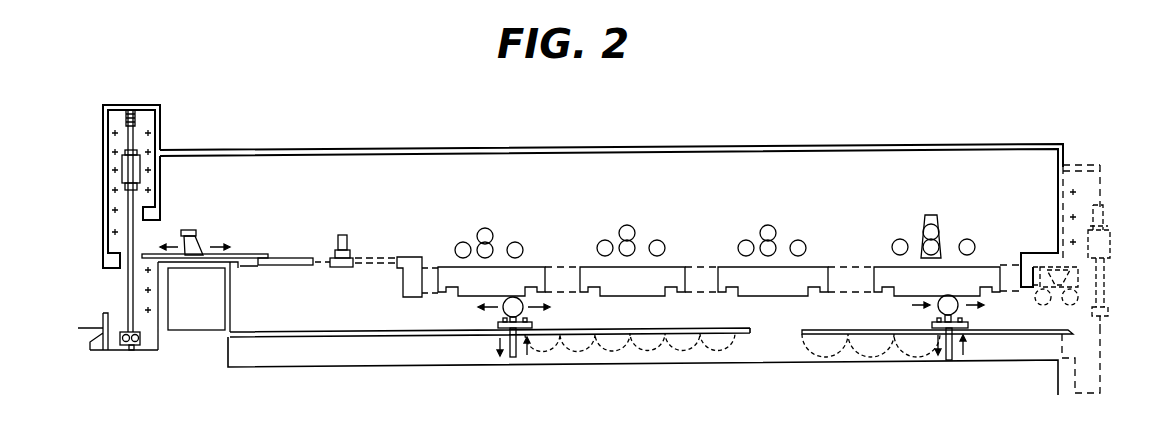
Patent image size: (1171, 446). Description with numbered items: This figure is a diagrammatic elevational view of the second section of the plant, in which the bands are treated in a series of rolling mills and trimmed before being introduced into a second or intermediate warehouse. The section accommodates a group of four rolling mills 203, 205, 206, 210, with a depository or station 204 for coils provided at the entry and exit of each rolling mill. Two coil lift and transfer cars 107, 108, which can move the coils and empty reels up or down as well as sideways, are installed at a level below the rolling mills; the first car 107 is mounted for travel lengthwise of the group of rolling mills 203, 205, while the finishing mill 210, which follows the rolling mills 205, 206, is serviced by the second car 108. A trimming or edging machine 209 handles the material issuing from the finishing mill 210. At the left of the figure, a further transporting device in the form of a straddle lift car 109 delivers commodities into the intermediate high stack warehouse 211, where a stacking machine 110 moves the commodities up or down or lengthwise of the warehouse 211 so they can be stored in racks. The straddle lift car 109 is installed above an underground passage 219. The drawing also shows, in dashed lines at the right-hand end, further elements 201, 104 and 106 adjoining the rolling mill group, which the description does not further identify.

The intermediate high stack warehouse 211 is at (148, 118).
The stacking machine 110 is at (127, 160).
The straddle lift car 109 is at (199, 230).
The underground passage 219 is at (200, 318).
The trimming or edging machine 209 is at (346, 233).
The finishing mill 210 is at (492, 229).
The rolling mill 206 is at (632, 226).
The rolling mill 205 is at (773, 226).
The rolling mill 203 is at (941, 223).
The depository or station for coils 204 is at (972, 240).
The coil lift and transfer car 108 is at (535, 329).
The coil lift and transfer car 107 is at (937, 307).
The discharge device 106 is at (1043, 307).
The end frame 201 is at (1093, 191).
The actuator 104 is at (1103, 248).